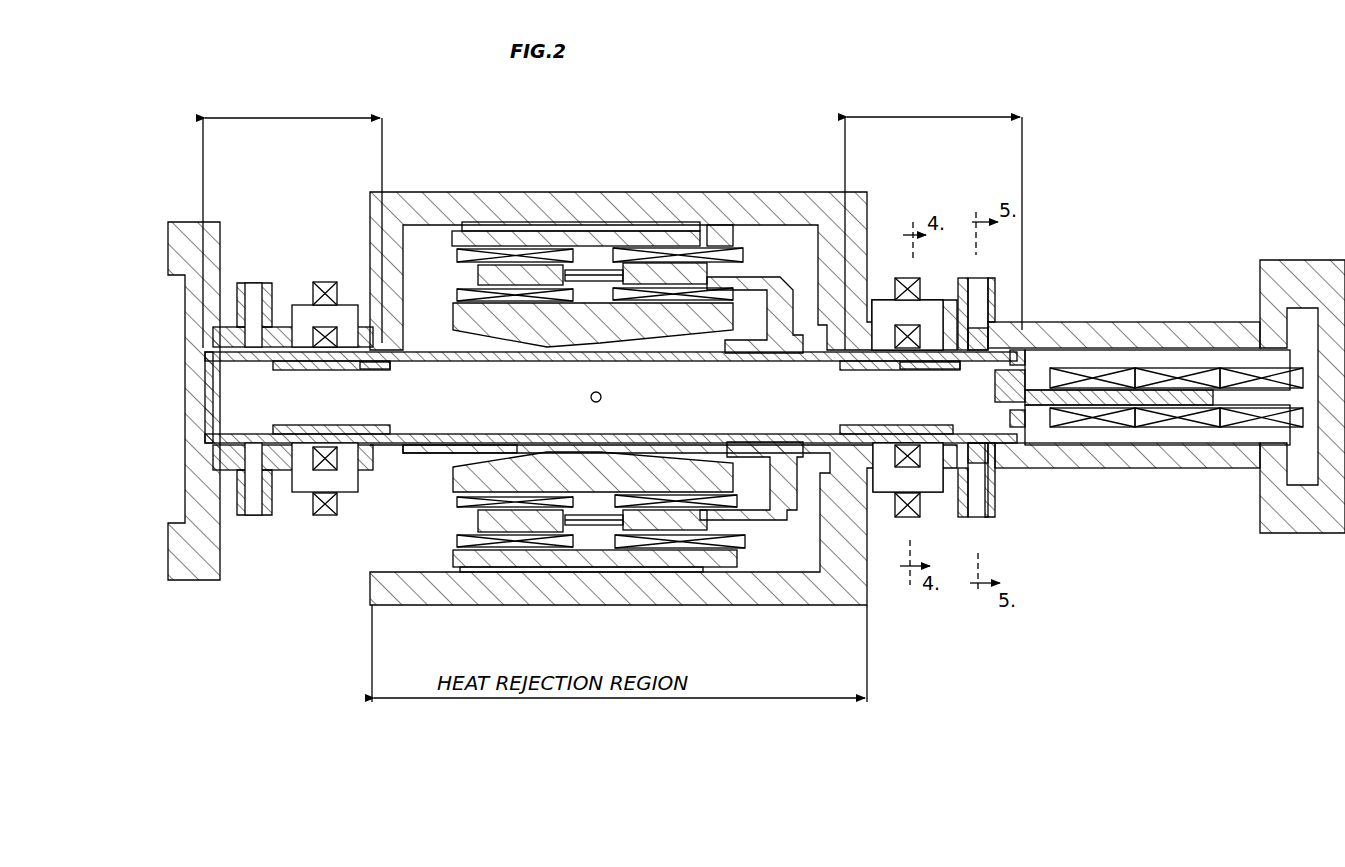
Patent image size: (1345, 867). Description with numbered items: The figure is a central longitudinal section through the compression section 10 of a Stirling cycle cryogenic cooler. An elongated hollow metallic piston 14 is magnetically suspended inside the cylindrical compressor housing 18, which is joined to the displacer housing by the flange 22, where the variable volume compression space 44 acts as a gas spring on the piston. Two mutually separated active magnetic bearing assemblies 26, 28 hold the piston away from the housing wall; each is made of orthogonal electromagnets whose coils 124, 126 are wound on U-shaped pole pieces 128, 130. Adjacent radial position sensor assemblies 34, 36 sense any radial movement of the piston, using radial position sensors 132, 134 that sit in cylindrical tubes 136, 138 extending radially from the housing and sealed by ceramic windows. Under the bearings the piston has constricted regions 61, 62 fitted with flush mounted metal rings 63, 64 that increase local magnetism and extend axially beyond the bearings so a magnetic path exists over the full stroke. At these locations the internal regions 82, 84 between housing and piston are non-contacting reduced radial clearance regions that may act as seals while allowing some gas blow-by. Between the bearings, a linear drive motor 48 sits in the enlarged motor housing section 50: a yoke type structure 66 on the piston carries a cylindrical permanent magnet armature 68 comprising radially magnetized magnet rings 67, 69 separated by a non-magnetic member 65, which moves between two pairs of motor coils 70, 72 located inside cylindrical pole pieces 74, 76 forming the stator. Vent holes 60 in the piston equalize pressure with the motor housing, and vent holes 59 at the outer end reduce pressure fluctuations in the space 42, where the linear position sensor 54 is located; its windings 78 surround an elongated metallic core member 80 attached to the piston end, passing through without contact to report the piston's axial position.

The compression section 10 is at (692, 158).
The piston 14 is at (501, 409).
The compressor housing 18 is at (1100, 324).
The flange 22 is at (210, 568).
The magnetic bearing assembly 26 is at (900, 572).
The magnetic bearing assembly 28 is at (323, 520).
The radial position sensor assembly 34 is at (994, 540).
The radial position sensor assembly 36 is at (254, 524).
The space 42 is at (1297, 500).
The variable volume compression space 44 is at (197, 385).
The linear drive motor 48 is at (575, 232).
The enlarged motor housing section 50 is at (612, 230).
The linear position sensor 54 is at (1163, 432).
The vent holes 59 is at (993, 382).
The vent holes 60 is at (603, 396).
The constricted region 61 is at (902, 368).
The constricted region 62 is at (378, 368).
The metal ring 63 is at (872, 368).
The metal ring 64 is at (322, 366).
The cylindrical non-magnetic member 65 is at (606, 270).
The yoke type structure 66 is at (775, 505).
The permanent magnet ring 67 is at (480, 275).
The permanent magnet armature 68 is at (733, 290).
The permanent magnet ring 69 is at (720, 268).
The motor coils 70 is at (753, 250).
The motor coils 72 is at (460, 295).
The pole piece 74 is at (462, 226).
The pole piece 76 is at (455, 318).
The windings 78 is at (1163, 368).
The core member 80 is at (1187, 368).
The clearance region 82 is at (933, 212).
The clearance region 84 is at (292, 211).
The coil 124 is at (920, 300).
The coil 126 is at (920, 517).
The pole piece 128 is at (882, 302).
The pole piece 130 is at (882, 492).
The radial position sensor 132 is at (975, 337).
The radial position sensor 134 is at (975, 458).
The cylindrical tube 136 is at (992, 290).
The cylindrical tube 138 is at (990, 495).